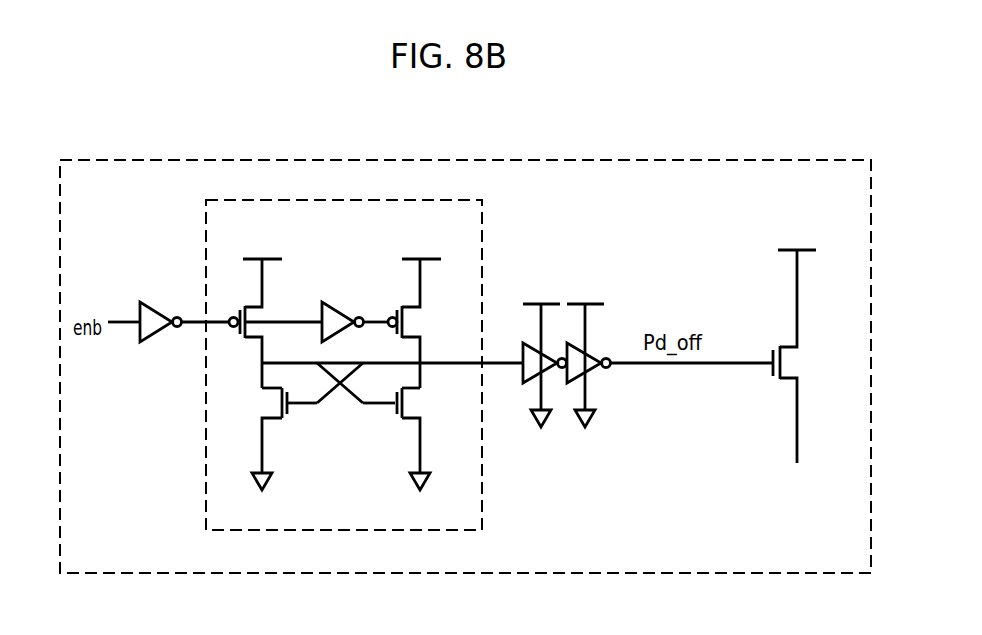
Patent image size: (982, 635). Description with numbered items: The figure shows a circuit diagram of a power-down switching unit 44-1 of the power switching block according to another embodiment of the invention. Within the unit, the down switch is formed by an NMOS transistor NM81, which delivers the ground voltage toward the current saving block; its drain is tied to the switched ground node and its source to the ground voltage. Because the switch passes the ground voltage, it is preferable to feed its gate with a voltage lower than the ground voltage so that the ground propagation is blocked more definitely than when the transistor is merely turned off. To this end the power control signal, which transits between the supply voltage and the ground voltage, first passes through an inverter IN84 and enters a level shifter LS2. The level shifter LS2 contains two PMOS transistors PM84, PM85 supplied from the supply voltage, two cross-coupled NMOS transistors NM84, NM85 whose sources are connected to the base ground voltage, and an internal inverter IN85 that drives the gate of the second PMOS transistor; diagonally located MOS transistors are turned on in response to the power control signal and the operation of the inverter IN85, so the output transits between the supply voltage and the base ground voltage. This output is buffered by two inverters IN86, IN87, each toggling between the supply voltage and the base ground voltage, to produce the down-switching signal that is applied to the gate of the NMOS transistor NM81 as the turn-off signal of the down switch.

The power-down switching unit 44-1 is at (706, 160).
The level shifter LS2 is at (408, 200).
The inverter IN84 is at (160, 309).
The PMOS transistor PM84 is at (246, 309).
The internal inverter IN85 is at (341, 309).
The PMOS transistor PM85 is at (426, 310).
The NMOS transistor NM84 is at (253, 454).
The NMOS transistor NM85 is at (429, 454).
The inverter IN86 is at (532, 367).
The inverter IN87 is at (598, 367).
The NMOS transistor NM81 is at (804, 359).